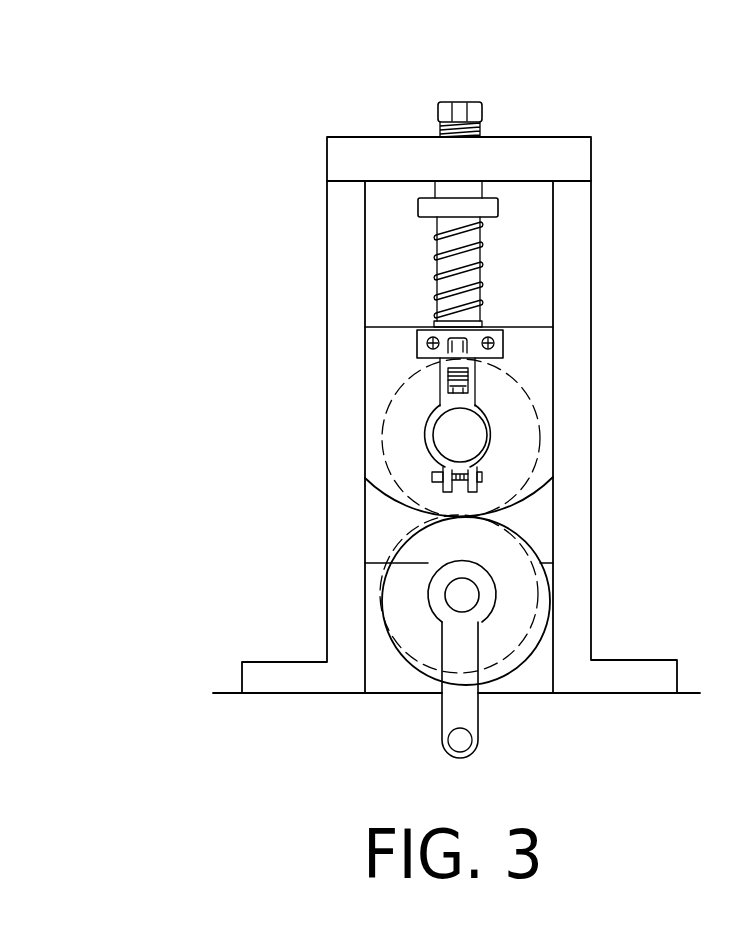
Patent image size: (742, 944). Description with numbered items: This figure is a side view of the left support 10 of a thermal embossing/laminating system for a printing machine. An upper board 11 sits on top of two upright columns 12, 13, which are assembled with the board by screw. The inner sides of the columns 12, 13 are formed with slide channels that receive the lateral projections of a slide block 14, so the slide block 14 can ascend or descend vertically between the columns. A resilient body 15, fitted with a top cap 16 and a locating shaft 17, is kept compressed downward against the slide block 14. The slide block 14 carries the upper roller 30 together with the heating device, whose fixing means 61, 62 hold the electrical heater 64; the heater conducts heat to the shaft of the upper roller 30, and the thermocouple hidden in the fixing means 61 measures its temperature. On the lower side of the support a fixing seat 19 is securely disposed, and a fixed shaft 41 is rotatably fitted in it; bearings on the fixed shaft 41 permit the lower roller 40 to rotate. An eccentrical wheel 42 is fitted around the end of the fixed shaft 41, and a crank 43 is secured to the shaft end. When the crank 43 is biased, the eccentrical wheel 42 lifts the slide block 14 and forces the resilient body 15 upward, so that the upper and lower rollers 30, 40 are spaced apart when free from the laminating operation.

The left support 10 is at (228, 411).
The upper board 11 is at (543, 148).
The upright column 12 is at (338, 238).
The upright column 13 is at (572, 535).
The slide block 14 is at (386, 483).
The resilient body 15 is at (468, 253).
The top cap 16 is at (462, 191).
The locating shaft 17 is at (440, 108).
The fixing seat 19 is at (383, 682).
The upper roller 30 is at (538, 406).
The lower roller 40 is at (380, 603).
The fixed shaft 41 is at (455, 593).
The eccentrical wheel 42 is at (514, 600).
The crank 43 is at (465, 741).
The fixing means 61 is at (502, 343).
The fixing means 62 is at (440, 383).
The electrical heater 64 is at (462, 440).